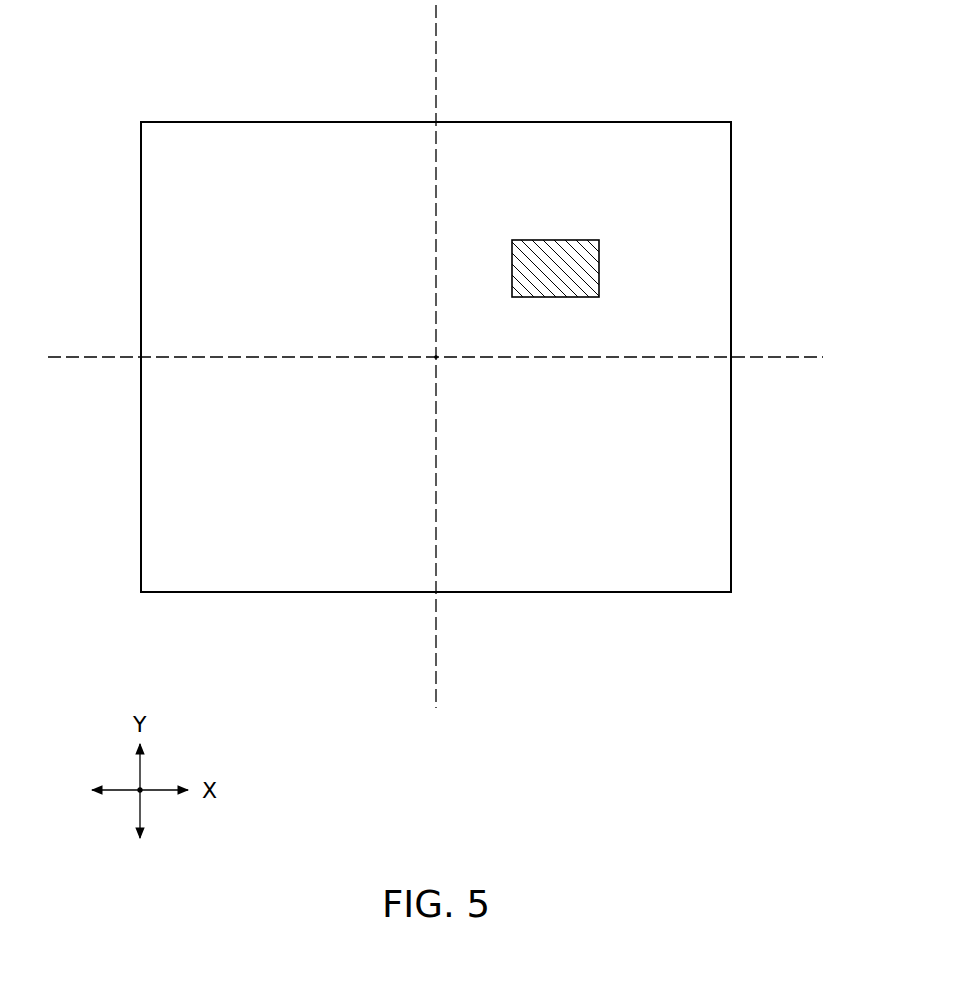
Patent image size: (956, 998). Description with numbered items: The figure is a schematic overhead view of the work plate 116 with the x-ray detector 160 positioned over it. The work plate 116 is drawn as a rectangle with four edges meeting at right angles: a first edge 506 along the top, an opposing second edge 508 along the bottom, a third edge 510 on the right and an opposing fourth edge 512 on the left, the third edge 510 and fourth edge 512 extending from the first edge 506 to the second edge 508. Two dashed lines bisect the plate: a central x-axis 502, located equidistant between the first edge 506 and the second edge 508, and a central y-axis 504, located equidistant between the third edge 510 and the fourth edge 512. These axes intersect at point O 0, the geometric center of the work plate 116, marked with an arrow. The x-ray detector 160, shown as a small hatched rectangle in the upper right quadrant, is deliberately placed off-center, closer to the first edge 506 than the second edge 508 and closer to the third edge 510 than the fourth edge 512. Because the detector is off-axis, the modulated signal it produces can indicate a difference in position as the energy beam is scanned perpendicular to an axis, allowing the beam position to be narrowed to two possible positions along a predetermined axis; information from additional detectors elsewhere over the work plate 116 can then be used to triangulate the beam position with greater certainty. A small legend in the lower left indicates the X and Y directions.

The work plate 116 is at (140, 227).
The x-ray detector 160 is at (558, 240).
The central x-axis 502 is at (768, 355).
The central y-axis 504 is at (437, 75).
The first edge 506 is at (280, 122).
The second edge 508 is at (278, 593).
The third edge 510 is at (732, 483).
The fourth edge 512 is at (140, 483).
The point O 0 is at (434, 355).